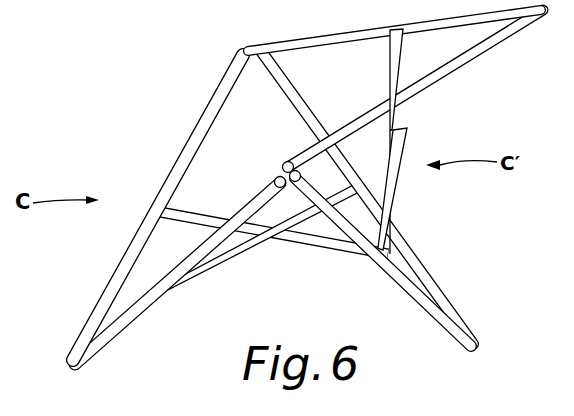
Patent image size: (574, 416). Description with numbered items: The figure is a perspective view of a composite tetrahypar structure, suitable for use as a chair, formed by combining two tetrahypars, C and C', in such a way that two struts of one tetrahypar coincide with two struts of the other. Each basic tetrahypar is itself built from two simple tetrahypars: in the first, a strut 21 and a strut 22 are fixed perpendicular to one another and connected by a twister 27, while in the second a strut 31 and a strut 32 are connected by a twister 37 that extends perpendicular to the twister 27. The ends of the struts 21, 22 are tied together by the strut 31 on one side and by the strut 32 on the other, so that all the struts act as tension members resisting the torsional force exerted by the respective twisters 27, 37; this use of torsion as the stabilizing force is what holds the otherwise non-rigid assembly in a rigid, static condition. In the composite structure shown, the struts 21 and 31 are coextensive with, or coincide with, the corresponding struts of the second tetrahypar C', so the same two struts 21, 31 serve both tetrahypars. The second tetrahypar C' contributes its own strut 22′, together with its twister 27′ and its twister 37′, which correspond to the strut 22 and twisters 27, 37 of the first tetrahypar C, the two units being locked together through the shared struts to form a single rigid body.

The strut 21 is at (435, 282).
The strut 31 is at (434, 323).
The strut 22 is at (100, 354).
The strut 32 is at (183, 147).
The strut 22′ is at (442, 78).
The twister 27 is at (188, 211).
The twister 27′ is at (390, 63).
The twister 37 is at (217, 257).
The twister 37′ is at (391, 203).